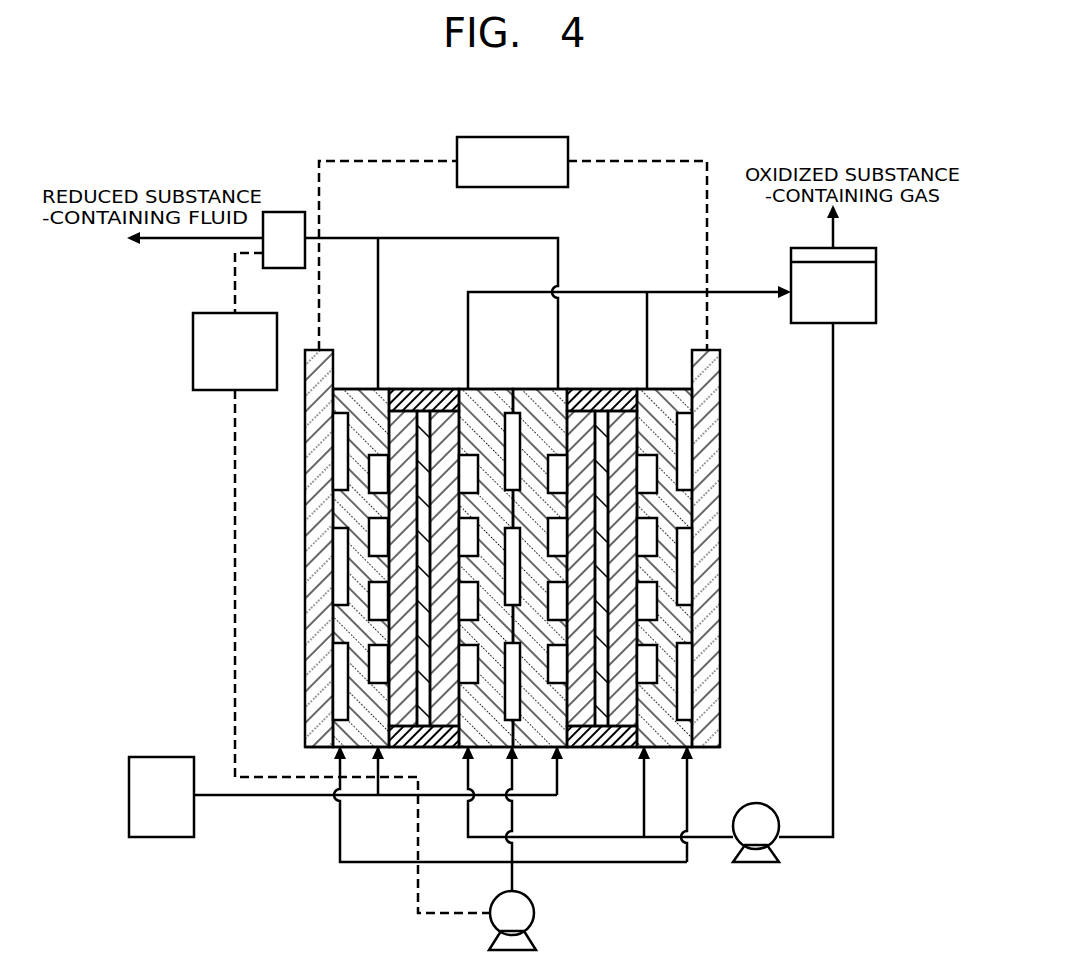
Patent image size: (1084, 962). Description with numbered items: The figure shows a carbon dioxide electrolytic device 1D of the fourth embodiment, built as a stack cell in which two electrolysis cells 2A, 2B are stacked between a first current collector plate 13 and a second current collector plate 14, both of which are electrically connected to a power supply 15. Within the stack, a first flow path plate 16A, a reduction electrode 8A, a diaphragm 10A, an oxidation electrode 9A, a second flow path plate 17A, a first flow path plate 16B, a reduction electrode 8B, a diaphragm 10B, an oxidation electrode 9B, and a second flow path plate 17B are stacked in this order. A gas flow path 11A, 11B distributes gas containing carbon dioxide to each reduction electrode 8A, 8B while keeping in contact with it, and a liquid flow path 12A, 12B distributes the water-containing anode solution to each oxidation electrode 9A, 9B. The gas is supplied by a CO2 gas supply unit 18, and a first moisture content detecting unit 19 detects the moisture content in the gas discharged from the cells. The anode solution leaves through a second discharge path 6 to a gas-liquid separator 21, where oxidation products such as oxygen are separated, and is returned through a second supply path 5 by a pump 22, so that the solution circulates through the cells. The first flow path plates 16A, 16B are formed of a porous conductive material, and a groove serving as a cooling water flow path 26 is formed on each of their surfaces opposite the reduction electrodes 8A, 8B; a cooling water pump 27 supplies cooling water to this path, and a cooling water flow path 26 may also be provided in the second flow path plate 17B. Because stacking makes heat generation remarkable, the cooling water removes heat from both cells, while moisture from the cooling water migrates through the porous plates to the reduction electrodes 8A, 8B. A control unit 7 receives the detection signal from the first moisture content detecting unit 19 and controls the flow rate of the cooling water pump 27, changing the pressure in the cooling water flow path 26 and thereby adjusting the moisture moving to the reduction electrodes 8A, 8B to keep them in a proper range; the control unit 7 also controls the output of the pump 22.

The carbon dioxide electrolytic device 1D is at (655, 110).
The electrolysis cell 2A is at (420, 291).
The electrolysis cell 2B is at (613, 290).
The second supply path 5 is at (667, 840).
The second discharge path 6 is at (505, 292).
The control unit 7 is at (193, 340).
The reduction electrode 8A is at (400, 418).
The reduction electrode 8B is at (583, 418).
The oxidation electrode 9A is at (443, 420).
The oxidation electrode 9B is at (625, 420).
The diaphragm 10A is at (424, 418).
The diaphragm 10B is at (606, 418).
The gas flow path 11A is at (338, 617).
The gas flow path 11B is at (558, 668).
The liquid flow path 12A is at (467, 668).
The liquid flow path 12B is at (645, 617).
The first current collector plate 13 is at (318, 675).
The second current collector plate 14 is at (705, 697).
The power supply 15 is at (487, 137).
The first flow path plate 16A is at (355, 400).
The first flow path plate 16B is at (533, 400).
The second flow path plate 17A is at (493, 400).
The second flow path plate 17B is at (667, 400).
The CO2 gas supply unit 18 is at (168, 757).
The first moisture content detecting unit 19 is at (277, 212).
The gas-liquid separator 21 is at (876, 288).
The pump 22 is at (757, 863).
The cooling water flow path 26 is at (338, 474).
The cooling water pump 27 is at (536, 918).